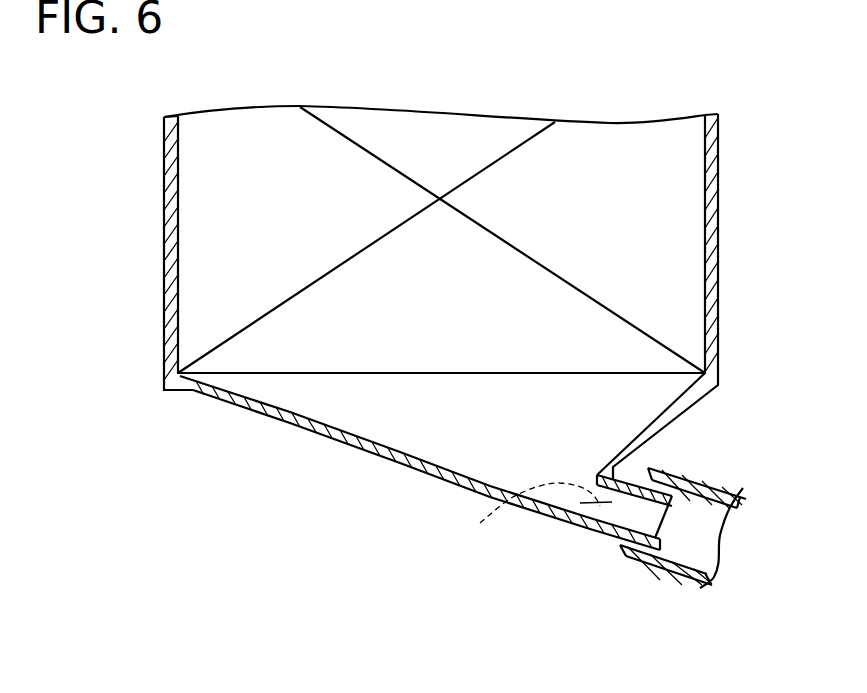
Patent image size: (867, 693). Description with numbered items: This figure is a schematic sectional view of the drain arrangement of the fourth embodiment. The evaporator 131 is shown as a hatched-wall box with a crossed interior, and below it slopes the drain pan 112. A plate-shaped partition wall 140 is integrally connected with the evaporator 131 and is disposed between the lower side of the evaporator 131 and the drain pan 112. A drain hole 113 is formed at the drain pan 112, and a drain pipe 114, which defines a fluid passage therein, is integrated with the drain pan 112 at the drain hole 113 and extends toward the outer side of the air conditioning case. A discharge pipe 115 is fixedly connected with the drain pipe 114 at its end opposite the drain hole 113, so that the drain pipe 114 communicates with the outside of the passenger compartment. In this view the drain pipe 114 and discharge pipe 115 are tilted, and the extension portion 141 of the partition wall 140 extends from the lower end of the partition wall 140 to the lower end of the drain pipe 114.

The evaporator 131 is at (245, 142).
The drain pan 112 is at (298, 418).
The partition wall 140 is at (437, 405).
The drain hole 113 is at (497, 521).
The extension portion 141 is at (600, 503).
The drain pipe 114 is at (600, 534).
The discharge pipe 115 is at (662, 557).